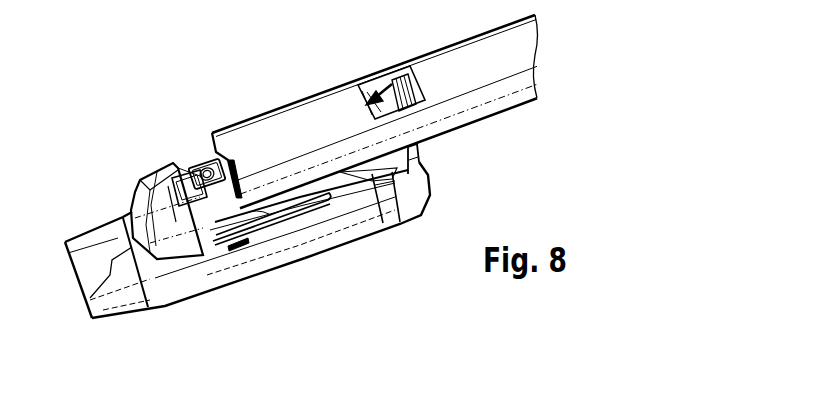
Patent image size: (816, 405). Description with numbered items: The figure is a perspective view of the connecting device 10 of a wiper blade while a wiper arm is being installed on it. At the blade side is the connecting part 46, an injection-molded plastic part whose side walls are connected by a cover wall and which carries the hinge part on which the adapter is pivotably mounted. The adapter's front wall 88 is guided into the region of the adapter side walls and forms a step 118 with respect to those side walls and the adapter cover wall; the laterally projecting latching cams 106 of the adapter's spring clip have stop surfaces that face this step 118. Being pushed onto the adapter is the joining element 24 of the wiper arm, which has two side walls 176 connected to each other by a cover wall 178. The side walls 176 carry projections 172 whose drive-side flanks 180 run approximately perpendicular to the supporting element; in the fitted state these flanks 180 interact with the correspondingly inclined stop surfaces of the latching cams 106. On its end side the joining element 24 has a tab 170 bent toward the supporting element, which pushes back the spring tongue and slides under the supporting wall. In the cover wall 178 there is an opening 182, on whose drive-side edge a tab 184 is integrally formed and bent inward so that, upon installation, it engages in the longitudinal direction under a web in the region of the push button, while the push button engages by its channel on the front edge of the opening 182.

The connecting device 10 is at (123, 157).
The joining element 24 is at (279, 108).
The connecting part 46 is at (160, 288).
The front wall 88 is at (132, 203).
The latching cams 106 is at (393, 217).
The step 118 is at (218, 249).
The tab 170 is at (201, 158).
The projections 172 is at (405, 176).
The side walls 176 is at (303, 183).
The cover wall 178 is at (250, 137).
The flanks 180 is at (419, 150).
The opening 182 is at (387, 94).
The tab 184 is at (412, 90).